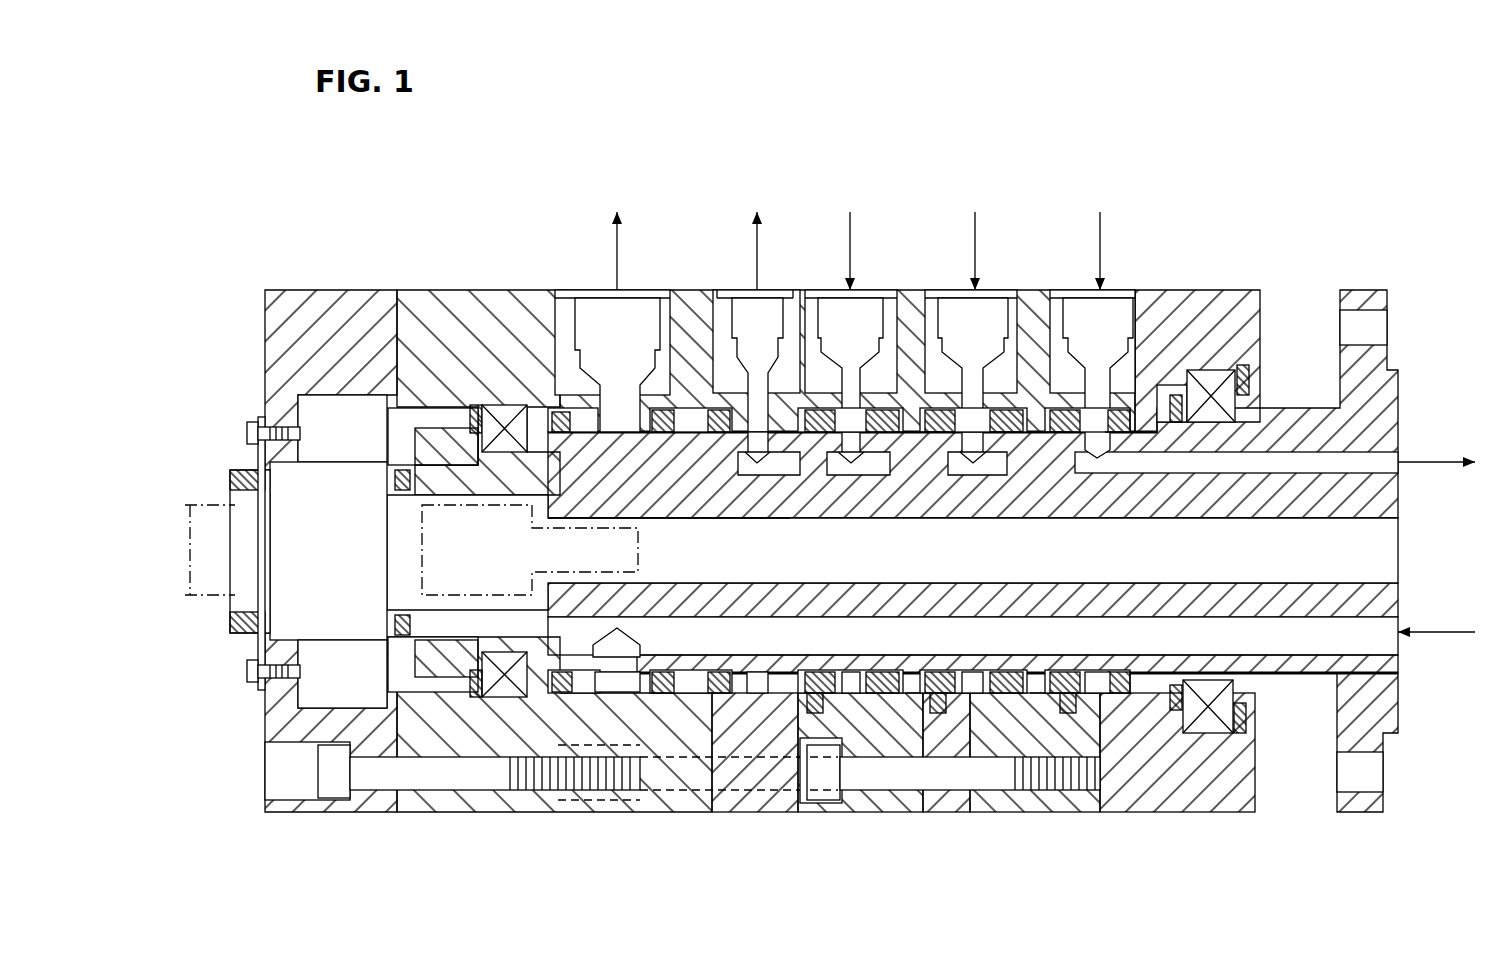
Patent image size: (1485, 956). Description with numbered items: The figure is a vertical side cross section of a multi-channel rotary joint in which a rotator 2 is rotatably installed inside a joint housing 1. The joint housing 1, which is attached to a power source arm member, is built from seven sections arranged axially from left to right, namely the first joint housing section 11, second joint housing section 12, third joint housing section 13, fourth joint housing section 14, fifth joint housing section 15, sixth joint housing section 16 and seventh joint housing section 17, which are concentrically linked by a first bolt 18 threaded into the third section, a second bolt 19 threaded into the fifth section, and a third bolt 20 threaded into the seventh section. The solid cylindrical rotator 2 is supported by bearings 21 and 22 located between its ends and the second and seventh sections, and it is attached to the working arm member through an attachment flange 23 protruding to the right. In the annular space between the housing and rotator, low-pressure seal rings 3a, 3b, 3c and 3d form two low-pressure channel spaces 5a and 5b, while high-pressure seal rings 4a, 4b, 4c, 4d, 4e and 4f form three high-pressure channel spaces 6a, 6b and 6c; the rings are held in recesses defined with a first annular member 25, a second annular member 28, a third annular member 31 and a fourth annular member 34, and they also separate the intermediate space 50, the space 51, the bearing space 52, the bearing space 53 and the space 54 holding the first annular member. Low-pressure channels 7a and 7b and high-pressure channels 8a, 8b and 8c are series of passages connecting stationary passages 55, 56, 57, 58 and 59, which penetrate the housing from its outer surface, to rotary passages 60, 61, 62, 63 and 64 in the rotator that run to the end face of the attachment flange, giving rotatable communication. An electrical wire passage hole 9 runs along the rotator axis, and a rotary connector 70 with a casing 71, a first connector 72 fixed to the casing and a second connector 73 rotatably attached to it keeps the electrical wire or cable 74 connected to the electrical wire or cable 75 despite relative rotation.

The joint housing 1 is at (388, 288).
The rotator 2 is at (1288, 695).
The first low-pressure seal ring 3a is at (635, 605).
The second low-pressure seal ring 3b is at (662, 435).
The third low-pressure seal ring 3c is at (712, 435).
The fourth low-pressure seal ring 3d is at (973, 553).
The first high-pressure seal ring 4a is at (805, 435).
The second high-pressure seal ring 4b is at (900, 435).
The third high-pressure seal ring 4c is at (925, 435).
The fourth high-pressure seal ring 4d is at (1000, 435).
The fifth high-pressure seal ring 4e is at (1060, 435).
The sixth high-pressure seal ring 4f is at (1120, 435).
The first low-pressure channel space 5a is at (655, 700).
The second low-pressure channel space 5b is at (757, 695).
The first high-pressure channel space 6a is at (851, 695).
The second high-pressure channel space 6b is at (972, 695).
The third high-pressure channel space 6c is at (1115, 700).
The first low-pressure channel 7a is at (641, 322).
The second low-pressure channel 7b is at (767, 322).
The first high-pressure channel 8a is at (858, 328).
The second high-pressure channel 8b is at (987, 328).
The third high-pressure channel 8c is at (1308, 445).
The electrical wire passage hole 9 is at (1340, 580).
The first joint housing section 11 is at (315, 812).
The second joint housing section 12 is at (465, 812).
The third joint housing section 13 is at (570, 795).
The fourth joint housing section 14 is at (725, 812).
The fifth joint housing section 15 is at (815, 812).
The sixth joint housing section 16 is at (1035, 812).
The seventh joint housing section 17 is at (1155, 812).
The first bolt 18 is at (420, 775).
The second bolt 19 is at (880, 795).
The third bolt 20 is at (995, 790).
The bearing 21 is at (460, 395).
The bearing 22 is at (1228, 347).
The attachment flange 23 is at (1362, 290).
The first annular member 25 is at (690, 408).
The second annular member 28 is at (892, 408).
The third annular member 31 is at (1015, 408).
The fourth annular member 34 is at (1170, 400).
The space 50 is at (907, 700).
The space 51 is at (1040, 700).
The space 52 is at (1205, 368).
The space 53 is at (500, 405).
The space 54 is at (695, 700).
The stationary passage 55 is at (592, 335).
The stationary passage 56 is at (740, 340).
The stationary passage 57 is at (825, 340).
The stationary passage 58 is at (952, 340).
The stationary passage 59 is at (1078, 340).
The rotary passage 60 is at (1345, 645).
The rotary passage 61 is at (770, 470).
The rotary passage 62 is at (862, 470).
The rotary passage 63 is at (985, 470).
The rotary passage 64 is at (1165, 480).
The rotary connector 70 is at (345, 455).
The casing 71 is at (268, 638).
The first connector 72 is at (405, 590).
The second connector 73 is at (245, 557).
The electrical wire or cable 74 is at (640, 612).
The electrical wire or cable 75 is at (250, 433).